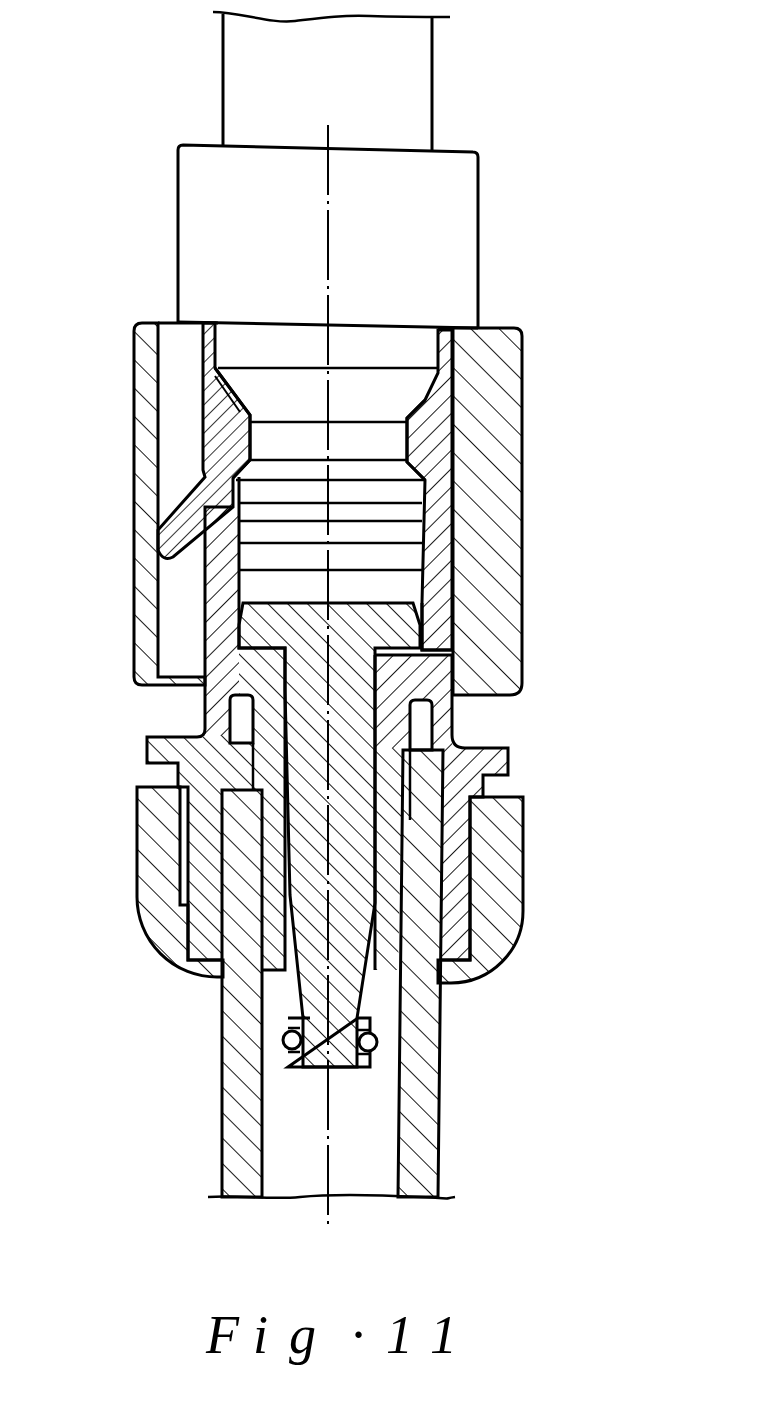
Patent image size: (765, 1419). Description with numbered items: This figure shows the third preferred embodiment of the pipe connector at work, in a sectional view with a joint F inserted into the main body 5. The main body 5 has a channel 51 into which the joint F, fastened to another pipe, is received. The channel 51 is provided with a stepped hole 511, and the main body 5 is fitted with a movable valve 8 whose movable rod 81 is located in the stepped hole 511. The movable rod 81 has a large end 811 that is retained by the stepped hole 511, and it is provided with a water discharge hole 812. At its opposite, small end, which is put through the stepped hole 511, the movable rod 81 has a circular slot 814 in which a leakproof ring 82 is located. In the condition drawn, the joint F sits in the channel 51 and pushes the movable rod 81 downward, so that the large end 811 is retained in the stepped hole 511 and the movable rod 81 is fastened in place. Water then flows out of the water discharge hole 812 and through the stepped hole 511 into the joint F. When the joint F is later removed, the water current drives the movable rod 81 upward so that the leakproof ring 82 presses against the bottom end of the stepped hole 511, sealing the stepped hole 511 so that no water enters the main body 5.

The joint F is at (410, 347).
The main body 5 is at (440, 553).
The channel 51 is at (413, 446).
The stepped hole 511 is at (405, 647).
The movable valve 8 is at (287, 1137).
The movable rod 81 is at (360, 718).
The large end 811 is at (273, 626).
The water discharge hole 812 is at (353, 1062).
The circular slot 814 is at (374, 1037).
The leakproof ring 82 is at (380, 1048).